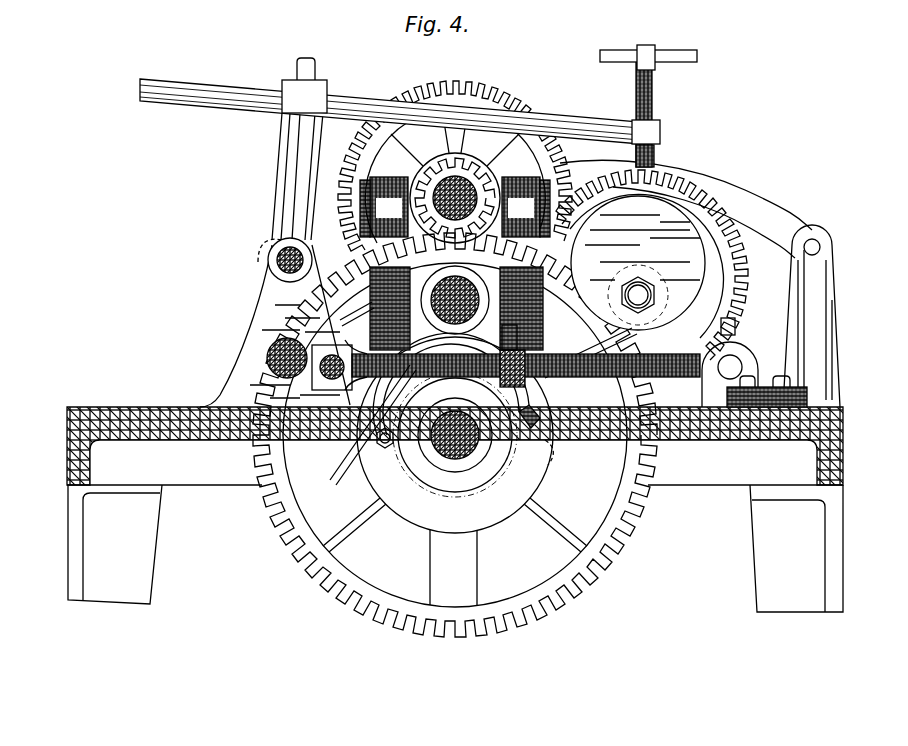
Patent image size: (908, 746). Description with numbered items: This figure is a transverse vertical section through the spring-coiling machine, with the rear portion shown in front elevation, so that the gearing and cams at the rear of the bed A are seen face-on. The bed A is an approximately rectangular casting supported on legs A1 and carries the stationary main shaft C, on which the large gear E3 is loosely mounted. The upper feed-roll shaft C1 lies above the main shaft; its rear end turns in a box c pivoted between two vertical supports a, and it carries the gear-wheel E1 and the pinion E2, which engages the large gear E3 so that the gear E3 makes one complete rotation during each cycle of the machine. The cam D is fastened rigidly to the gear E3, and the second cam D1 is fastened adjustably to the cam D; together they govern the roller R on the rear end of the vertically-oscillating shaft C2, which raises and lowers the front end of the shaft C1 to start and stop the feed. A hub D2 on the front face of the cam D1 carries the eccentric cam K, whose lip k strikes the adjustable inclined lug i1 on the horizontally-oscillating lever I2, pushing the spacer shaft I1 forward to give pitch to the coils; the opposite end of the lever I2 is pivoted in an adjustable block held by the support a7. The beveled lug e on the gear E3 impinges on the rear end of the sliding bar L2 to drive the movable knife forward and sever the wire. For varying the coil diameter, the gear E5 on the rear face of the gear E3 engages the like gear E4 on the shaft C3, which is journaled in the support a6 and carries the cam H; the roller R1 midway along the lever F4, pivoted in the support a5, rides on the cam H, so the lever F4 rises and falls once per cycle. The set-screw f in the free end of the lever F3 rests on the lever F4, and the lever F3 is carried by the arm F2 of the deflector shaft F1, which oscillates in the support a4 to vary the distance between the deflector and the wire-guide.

The bed A is at (66, 433).
The legs A1 is at (455, 548).
The large gear E3 is at (483, 622).
The gear E5 is at (440, 518).
The hub D2 is at (463, 475).
The cam K is at (503, 477).
The cam D is at (380, 440).
The cam D1 is at (450, 440).
The lip k is at (528, 443).
The beveled lug e is at (612, 540).
The vertical supports a is at (455, 263).
The vertically-oscillating shaft C2 is at (355, 305).
The gear-wheel E1 is at (462, 90).
The upper feed-roll shaft C1 is at (482, 160).
The box c is at (430, 158).
The pinion E2 is at (537, 127).
The cam H is at (660, 217).
The gear-wheel E4 is at (638, 295).
The oscillating lever F4 is at (750, 197).
The roller R1 is at (657, 163).
The shaft C3 is at (790, 248).
The support a5 is at (825, 293).
The support a7 is at (747, 365).
The support a6 is at (676, 347).
The horizontally-oscillating lever I2 is at (652, 363).
The inclined lug i1 is at (580, 443).
The roller R is at (257, 312).
The longitudinally-sliding bar L2 is at (267, 358).
The horizontal shaft I1 is at (325, 368).
The support a4 is at (265, 283).
The arm F2 is at (277, 175).
The shaft F1 is at (268, 260).
The lever F3 is at (218, 95).
The set-screw f is at (652, 100).
The main shaft C is at (360, 567).